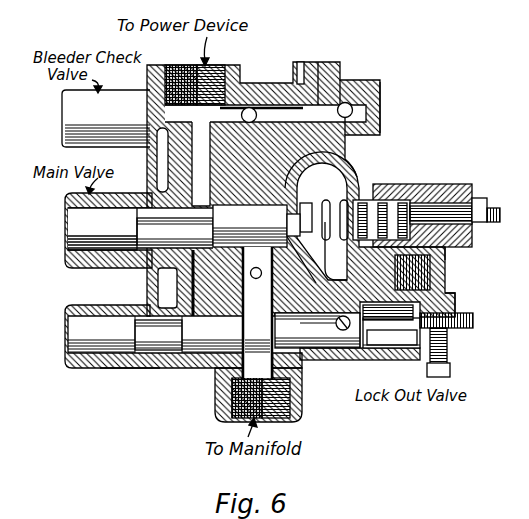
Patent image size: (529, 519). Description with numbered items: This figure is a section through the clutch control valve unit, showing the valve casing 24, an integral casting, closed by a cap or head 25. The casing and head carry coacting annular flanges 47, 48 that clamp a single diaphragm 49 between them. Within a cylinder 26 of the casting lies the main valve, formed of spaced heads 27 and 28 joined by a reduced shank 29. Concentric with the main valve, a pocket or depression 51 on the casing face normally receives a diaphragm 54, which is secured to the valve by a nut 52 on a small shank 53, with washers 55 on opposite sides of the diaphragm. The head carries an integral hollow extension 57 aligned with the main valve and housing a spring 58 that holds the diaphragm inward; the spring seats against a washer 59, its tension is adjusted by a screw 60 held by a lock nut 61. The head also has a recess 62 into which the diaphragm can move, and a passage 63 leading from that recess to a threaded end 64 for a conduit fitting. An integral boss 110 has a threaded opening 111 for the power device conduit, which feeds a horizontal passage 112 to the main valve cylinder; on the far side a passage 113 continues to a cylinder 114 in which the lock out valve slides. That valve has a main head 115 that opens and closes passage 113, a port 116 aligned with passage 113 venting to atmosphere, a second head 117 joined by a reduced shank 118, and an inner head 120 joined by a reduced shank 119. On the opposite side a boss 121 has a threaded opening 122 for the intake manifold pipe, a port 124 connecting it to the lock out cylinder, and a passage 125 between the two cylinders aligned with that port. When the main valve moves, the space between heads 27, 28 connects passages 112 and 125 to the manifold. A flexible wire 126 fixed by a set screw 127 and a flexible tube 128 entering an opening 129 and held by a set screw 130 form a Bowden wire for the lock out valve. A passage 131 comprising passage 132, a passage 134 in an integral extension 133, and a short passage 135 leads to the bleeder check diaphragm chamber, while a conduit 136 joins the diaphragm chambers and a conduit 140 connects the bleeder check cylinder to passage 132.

The valve casing 24 is at (92, 380).
The cap or head 25 is at (391, 123).
The cylinder 26 is at (147, 194).
The head 27 is at (102, 229).
The head 28 is at (250, 225).
The reduced shank 29 is at (175, 230).
The annular flange 47 is at (301, 62).
The annular flange 48 is at (339, 62).
The diaphragm 49 is at (318, 61).
The pocket or depression 51 is at (327, 199).
The nut 52 is at (343, 200).
The small shank 53 is at (284, 218).
The diaphragm 54 is at (305, 274).
The washers 55 is at (304, 202).
The hollow extension 57 is at (448, 186).
The spring 58 is at (374, 190).
The washer 59 is at (447, 258).
The screw 60 is at (500, 216).
The lock nut 61 is at (487, 204).
The depression or recess 62 is at (351, 153).
The passage 63 is at (343, 276).
The threaded end 64 is at (430, 272).
The boss 110 is at (150, 78).
The threaded opening 111 is at (173, 65).
The passage 112 is at (162, 140).
The passage 113 is at (160, 283).
The cylinder 114 is at (160, 369).
The main head 115 is at (212, 334).
The port 116 is at (238, 363).
The second head 117 is at (78, 335).
The reduced shank 118 is at (135, 325).
The reduced shank 119 is at (259, 335).
The inner head 120 is at (317, 329).
The boss 121 is at (303, 400).
The threaded opening 122 is at (287, 420).
The port 124 is at (233, 373).
The passage 125 is at (258, 281).
The flexible wire 126 is at (375, 326).
The set screw 127 is at (344, 331).
The flexible tube 128 is at (450, 312).
The opening 129 is at (463, 330).
The set screw 130 is at (430, 370).
The passage 131 is at (241, 72).
The passage 132 is at (258, 106).
The extension 133 is at (382, 84).
The passage 134 is at (353, 86).
The short passage 135 is at (383, 108).
The conduit 136 is at (257, 267).
The conduit 140 is at (293, 100).